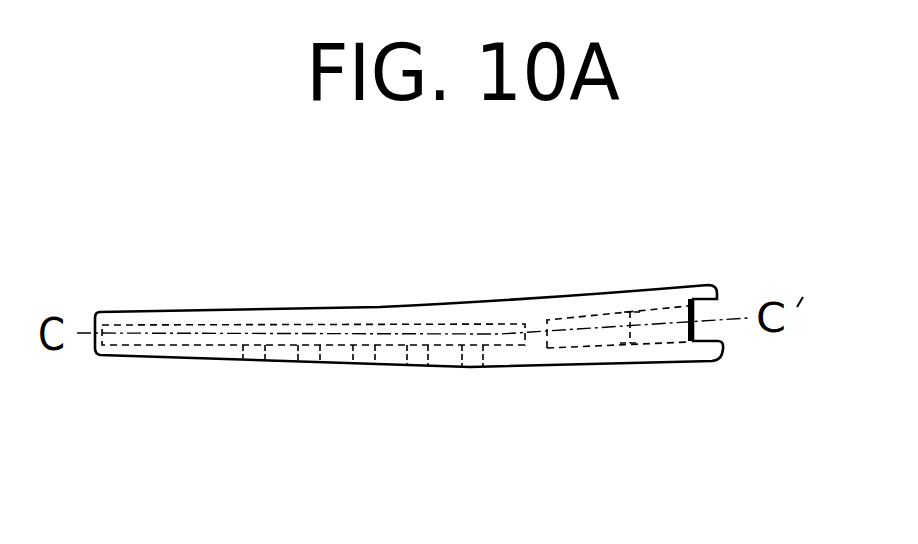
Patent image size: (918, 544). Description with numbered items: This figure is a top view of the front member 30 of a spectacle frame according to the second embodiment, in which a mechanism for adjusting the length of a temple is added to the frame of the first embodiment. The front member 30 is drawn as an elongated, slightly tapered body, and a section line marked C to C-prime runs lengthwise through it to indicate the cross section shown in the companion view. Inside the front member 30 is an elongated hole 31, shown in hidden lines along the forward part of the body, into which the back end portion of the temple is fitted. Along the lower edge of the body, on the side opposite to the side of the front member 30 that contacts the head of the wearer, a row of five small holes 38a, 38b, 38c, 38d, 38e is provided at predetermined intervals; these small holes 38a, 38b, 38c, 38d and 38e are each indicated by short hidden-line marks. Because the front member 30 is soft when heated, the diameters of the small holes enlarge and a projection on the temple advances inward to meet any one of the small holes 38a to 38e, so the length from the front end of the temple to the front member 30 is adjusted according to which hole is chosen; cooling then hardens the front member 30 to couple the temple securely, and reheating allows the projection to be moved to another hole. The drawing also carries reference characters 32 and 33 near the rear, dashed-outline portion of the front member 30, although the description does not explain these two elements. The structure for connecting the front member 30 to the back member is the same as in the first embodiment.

The front member 30 is at (226, 318).
The elongated hole 31 is at (372, 330).
The second internal portion 32 is at (577, 342).
The end portion 33 is at (663, 335).
The small hole 38a is at (253, 360).
The small hole 38b is at (305, 363).
The small hole 38c is at (360, 360).
The small hole 38d is at (417, 363).
The small hole 38e is at (473, 365).